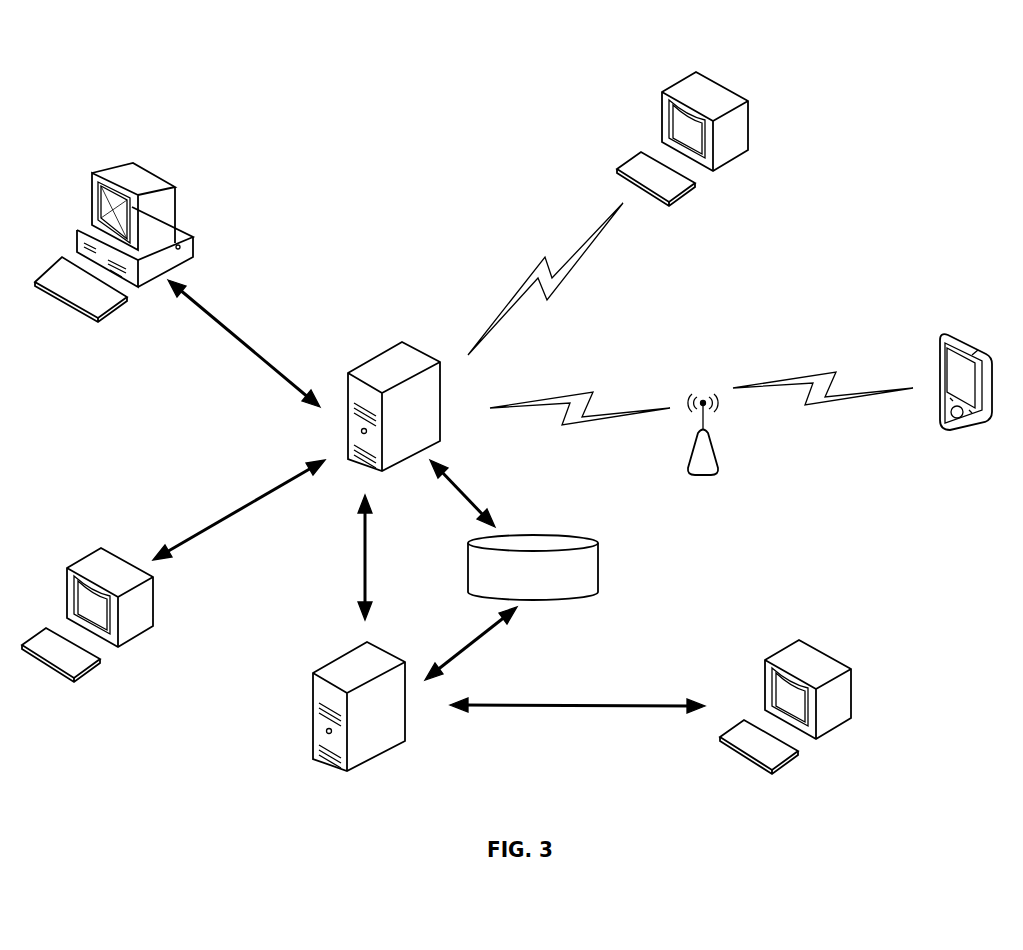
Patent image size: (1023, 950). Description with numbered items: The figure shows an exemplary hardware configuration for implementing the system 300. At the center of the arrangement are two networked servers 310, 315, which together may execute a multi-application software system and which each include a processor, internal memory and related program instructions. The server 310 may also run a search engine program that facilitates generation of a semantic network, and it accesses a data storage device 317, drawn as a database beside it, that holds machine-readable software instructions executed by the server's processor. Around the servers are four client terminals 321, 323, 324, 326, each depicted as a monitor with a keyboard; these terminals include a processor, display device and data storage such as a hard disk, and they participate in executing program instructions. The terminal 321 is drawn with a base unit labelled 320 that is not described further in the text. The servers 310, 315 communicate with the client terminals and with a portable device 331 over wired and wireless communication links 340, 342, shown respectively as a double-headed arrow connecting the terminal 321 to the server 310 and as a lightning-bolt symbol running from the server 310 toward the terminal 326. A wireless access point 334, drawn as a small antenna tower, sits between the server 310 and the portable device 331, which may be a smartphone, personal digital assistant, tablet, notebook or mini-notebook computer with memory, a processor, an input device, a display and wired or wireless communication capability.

The system 300 is at (60, 30).
The networked server 310 is at (394, 406).
The networked server 315 is at (359, 706).
The data storage device 317 is at (533, 567).
The client computer base unit 320 is at (177, 248).
The client terminal 321 is at (105, 231).
The client terminal 323 is at (87, 599).
The client terminal 324 is at (785, 689).
The client terminal 326 is at (682, 121).
The portable device 331 is at (941, 369).
The wireless access point 334 is at (701, 423).
The wired communication link 340 is at (213, 315).
The wireless communication link 342 is at (545, 279).